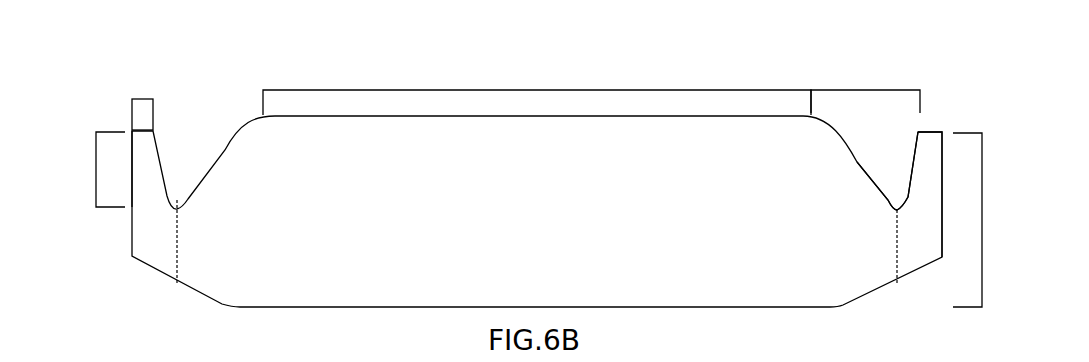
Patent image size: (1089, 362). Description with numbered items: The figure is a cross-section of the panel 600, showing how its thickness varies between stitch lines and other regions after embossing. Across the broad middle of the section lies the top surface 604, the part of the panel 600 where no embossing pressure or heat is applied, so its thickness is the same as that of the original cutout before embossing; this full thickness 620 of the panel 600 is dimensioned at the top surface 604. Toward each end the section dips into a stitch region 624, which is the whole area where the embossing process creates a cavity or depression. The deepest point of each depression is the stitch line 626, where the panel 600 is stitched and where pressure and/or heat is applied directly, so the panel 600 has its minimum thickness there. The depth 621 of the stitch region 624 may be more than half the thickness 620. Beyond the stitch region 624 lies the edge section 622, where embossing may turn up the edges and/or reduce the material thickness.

The panel 600 is at (249, 113).
The top surface 604 is at (538, 90).
The thickness 620 is at (982, 220).
The depth 621 is at (96, 172).
The edge section 622 is at (142, 99).
The stitch region 624 is at (865, 90).
The stitch line 626 is at (896, 206).